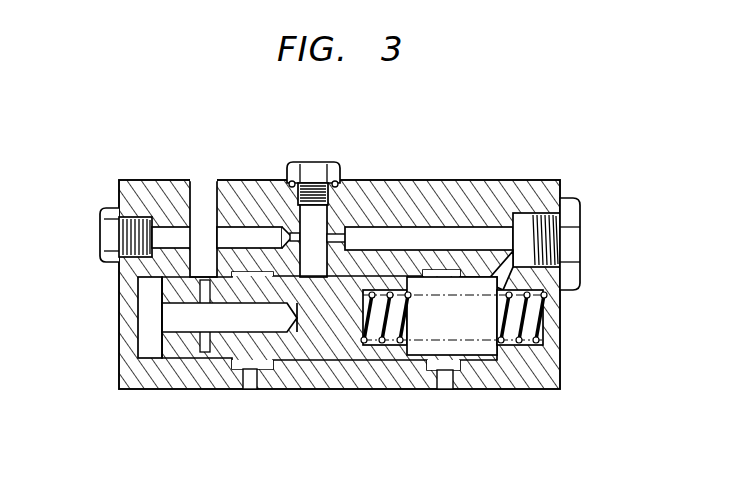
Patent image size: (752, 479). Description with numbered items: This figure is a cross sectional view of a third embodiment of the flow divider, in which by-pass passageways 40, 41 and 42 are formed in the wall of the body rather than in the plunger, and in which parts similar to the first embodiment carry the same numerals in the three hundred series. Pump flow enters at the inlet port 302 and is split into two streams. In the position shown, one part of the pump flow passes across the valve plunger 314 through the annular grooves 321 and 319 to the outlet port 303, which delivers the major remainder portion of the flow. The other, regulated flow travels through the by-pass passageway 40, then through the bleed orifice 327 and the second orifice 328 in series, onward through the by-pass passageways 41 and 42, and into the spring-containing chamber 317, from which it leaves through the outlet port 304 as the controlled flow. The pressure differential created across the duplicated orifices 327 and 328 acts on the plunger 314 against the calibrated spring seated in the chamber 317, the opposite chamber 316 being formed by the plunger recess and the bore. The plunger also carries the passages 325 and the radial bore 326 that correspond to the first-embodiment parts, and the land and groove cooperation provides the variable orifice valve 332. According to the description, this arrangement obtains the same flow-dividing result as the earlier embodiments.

The by-pass passageway 40 is at (252, 238).
The by-pass passageway 41 is at (427, 240).
The by-pass passageway 42 is at (504, 262).
The inlet port 302 is at (203, 194).
The outlet port 303 is at (252, 388).
The outlet port 304 is at (442, 378).
The valve plunger 314 is at (345, 372).
The chamber 316 is at (147, 304).
The chamber 317 is at (556, 318).
The annular groove 319 is at (229, 317).
The annular groove 321 is at (192, 352).
The passages 325 is at (202, 348).
The radial bore 326 is at (316, 221).
The bleed orifice 327 is at (278, 236).
The second orifice 328 is at (358, 236).
The variable orifice valve 332 is at (305, 390).